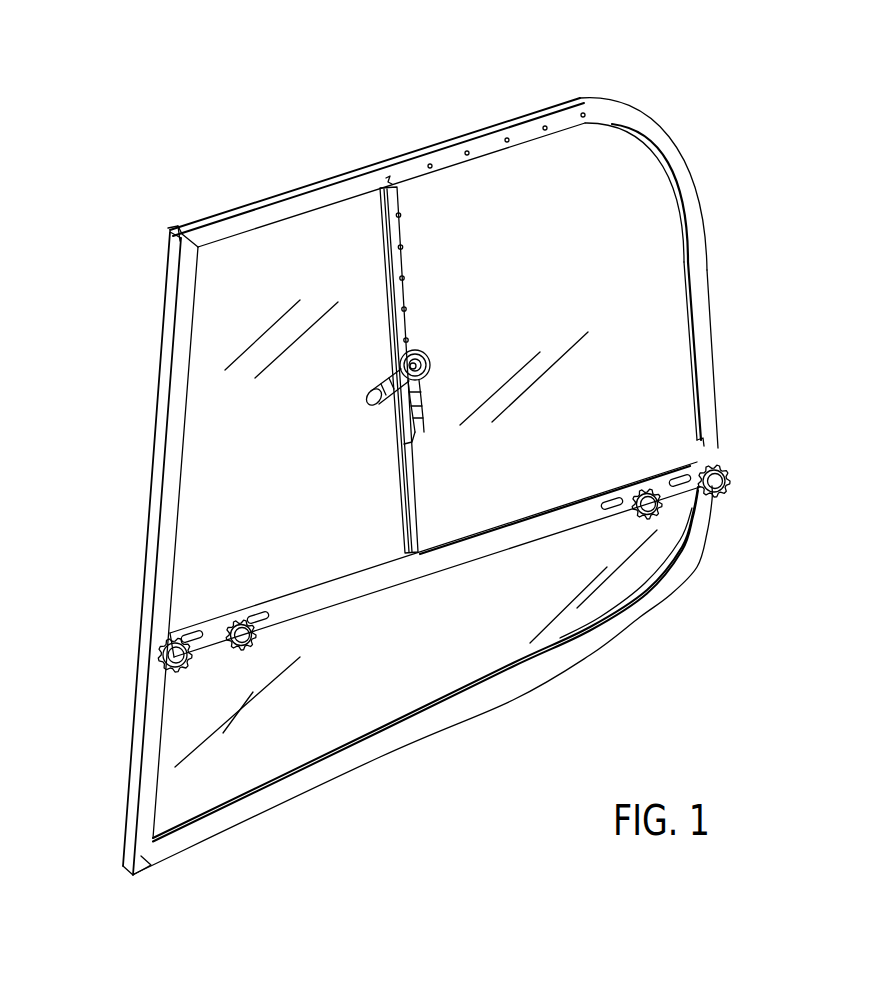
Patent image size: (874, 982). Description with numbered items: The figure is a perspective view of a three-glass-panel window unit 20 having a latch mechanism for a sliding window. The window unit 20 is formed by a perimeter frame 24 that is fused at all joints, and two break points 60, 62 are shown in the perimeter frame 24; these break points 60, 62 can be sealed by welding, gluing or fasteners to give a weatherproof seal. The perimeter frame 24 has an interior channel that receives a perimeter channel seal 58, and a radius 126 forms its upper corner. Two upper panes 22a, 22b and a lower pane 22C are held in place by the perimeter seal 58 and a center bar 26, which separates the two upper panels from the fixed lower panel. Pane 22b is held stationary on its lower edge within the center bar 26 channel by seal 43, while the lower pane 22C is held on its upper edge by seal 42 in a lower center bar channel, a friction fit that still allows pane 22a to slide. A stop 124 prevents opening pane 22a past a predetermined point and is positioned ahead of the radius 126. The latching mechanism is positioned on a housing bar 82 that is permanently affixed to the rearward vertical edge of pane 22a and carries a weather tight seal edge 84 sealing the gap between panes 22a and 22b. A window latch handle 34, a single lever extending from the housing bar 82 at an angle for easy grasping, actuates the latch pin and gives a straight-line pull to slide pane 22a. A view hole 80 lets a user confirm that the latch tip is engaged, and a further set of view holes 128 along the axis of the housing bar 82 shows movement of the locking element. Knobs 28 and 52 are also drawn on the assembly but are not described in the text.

The window unit 20 is at (756, 229).
The upper pane 22a is at (272, 250).
The upper pane 22b is at (552, 173).
The lower pane 22C is at (300, 740).
The perimeter frame 24 is at (713, 402).
The center bar 26 is at (553, 522).
The end knob 28 is at (172, 655).
The window latch handle 34 is at (380, 380).
The seal 42 is at (377, 563).
The seal 43 is at (488, 155).
The knob 52 is at (262, 627).
The perimeter channel seal 58 is at (513, 663).
The break point 60 is at (168, 248).
The break point 62 is at (124, 863).
The view hole 80 is at (467, 153).
The housing bar 82 is at (407, 322).
The weather tight seal edge 84 is at (404, 462).
The stop 124 is at (620, 503).
The radius 126 is at (655, 120).
The view holes 128 is at (407, 305).